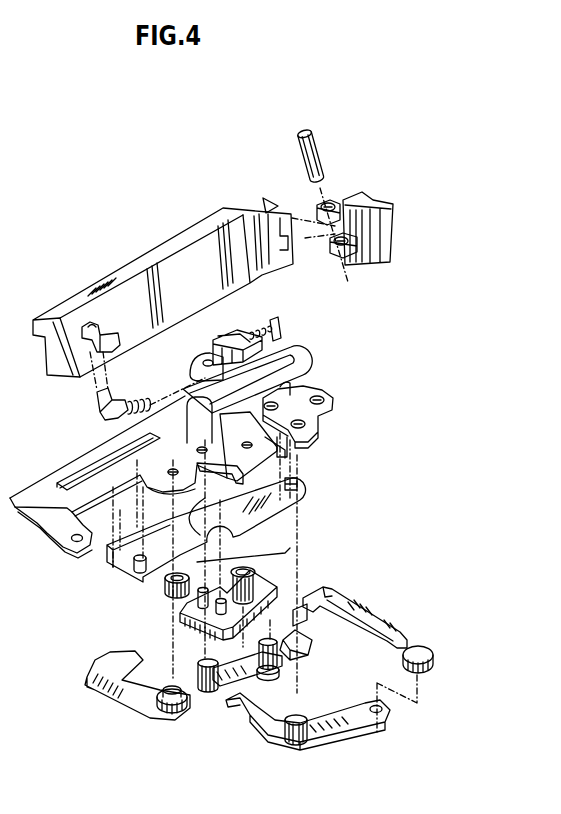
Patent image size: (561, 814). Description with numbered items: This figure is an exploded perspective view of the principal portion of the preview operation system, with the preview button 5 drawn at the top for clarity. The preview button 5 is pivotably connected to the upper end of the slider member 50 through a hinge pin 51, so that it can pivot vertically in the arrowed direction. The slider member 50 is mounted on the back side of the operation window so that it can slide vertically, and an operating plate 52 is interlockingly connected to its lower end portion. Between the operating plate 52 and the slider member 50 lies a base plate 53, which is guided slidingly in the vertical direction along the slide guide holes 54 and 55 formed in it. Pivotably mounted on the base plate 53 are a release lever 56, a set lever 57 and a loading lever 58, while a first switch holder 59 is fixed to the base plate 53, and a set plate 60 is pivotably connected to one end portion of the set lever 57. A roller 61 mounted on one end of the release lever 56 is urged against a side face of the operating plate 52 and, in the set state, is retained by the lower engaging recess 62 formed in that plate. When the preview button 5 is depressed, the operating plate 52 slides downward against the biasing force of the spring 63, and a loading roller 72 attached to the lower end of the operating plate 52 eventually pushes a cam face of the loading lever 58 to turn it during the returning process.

The preview button 5 is at (375, 233).
The slider member 50 is at (172, 240).
The hinge pin 51 is at (322, 150).
The operating plate 52 is at (280, 504).
The base plate 53 is at (290, 392).
The slide guide hole 54 is at (82, 465).
The slide guide hole 55 is at (290, 352).
The release lever 56 is at (310, 644).
The set lever 57 is at (347, 730).
The loading lever 58 is at (105, 707).
The first switch holder 59 is at (273, 593).
The set plate 60 is at (380, 618).
The roller 61 is at (213, 697).
The lower engaging recess 62 is at (216, 499).
The spring 63 is at (149, 392).
The loading roller 72 is at (165, 590).